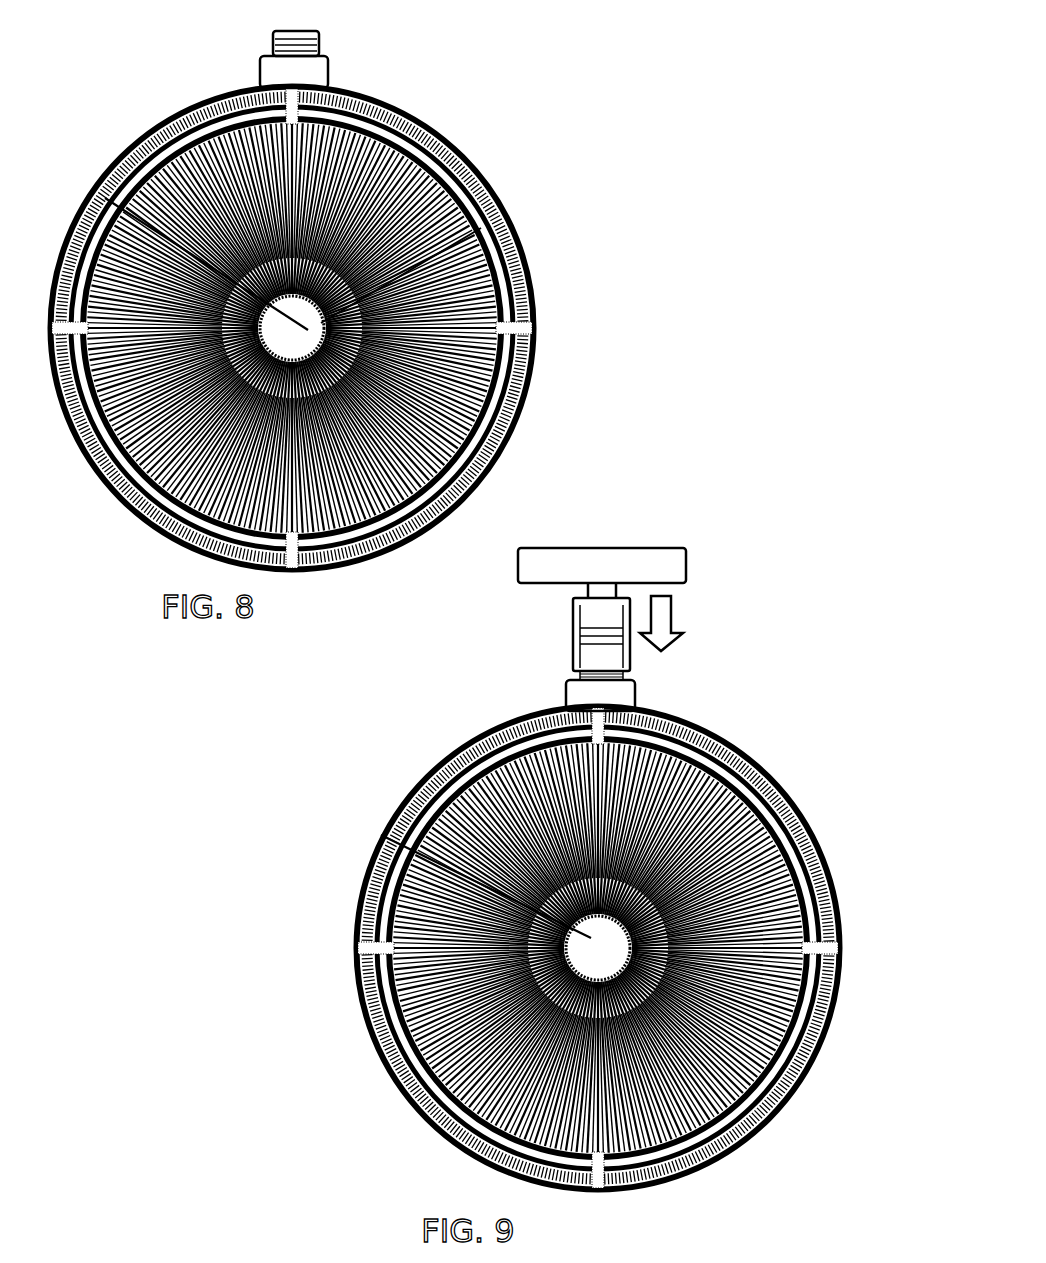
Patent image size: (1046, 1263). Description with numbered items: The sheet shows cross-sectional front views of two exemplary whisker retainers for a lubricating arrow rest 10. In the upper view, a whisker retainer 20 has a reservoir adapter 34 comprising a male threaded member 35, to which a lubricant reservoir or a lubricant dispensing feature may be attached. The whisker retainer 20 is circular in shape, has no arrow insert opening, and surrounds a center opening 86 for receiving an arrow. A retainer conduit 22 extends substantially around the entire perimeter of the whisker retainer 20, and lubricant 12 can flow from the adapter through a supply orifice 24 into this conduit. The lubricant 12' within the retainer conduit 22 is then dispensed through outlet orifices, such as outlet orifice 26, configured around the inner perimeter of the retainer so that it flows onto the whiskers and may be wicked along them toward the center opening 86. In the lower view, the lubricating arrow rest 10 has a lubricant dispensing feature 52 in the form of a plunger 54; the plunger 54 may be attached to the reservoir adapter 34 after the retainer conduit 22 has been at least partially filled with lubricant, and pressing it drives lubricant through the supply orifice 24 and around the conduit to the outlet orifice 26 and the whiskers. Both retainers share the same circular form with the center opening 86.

In FIG. 8, the lubricating arrow rest 10 is at (335, 289).
In FIG. 9, the lubricating arrow rest 10 is at (564, 827).
In FIG. 8, the lubricant 12 is at (346, 328).
In FIG. 9, the lubricant 12 is at (554, 948).
In FIG. 8, the lubricant within the retainer conduit 12' is at (343, 328).
In FIG. 8, the whisker retainer 20 is at (440, 130).
In FIG. 9, the whisker retainer 20 is at (723, 738).
In FIG. 8, the retainer conduit 22 is at (480, 174).
In FIG. 9, the retainer conduit 22 is at (767, 775).
In FIG. 9, the supply orifice 24 is at (580, 702).
In FIG. 8, the outlet orifice 26 is at (490, 322).
In FIG. 9, the outlet orifice 26 is at (373, 940).
In FIG. 8, the reservoir adapter 34 is at (305, 62).
In FIG. 9, the reservoir adapter 34 is at (620, 690).
In FIG. 8, the male threaded member 35 is at (265, 34).
In FIG. 9, the lubricant dispensing feature 52 is at (613, 542).
In FIG. 9, the plunger 54 is at (640, 560).
In FIG. 8, the center opening 86 is at (95, 190).
In FIG. 9, the center opening 86 is at (373, 827).